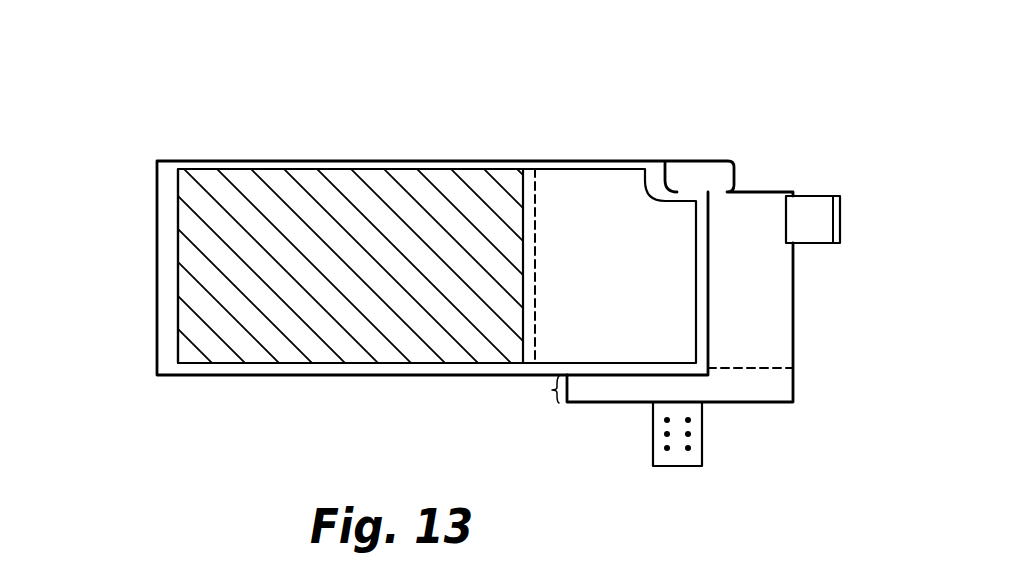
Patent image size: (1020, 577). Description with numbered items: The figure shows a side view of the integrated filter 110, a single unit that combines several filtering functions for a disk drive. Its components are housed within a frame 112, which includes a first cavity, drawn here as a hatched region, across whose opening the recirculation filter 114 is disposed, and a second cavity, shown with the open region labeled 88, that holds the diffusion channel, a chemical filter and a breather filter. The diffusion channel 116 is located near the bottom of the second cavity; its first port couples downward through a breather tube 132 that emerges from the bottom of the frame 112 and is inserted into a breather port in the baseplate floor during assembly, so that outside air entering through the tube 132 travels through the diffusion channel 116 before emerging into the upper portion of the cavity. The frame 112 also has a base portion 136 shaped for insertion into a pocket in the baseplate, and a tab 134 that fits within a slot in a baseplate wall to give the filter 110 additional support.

The integrated filter 110 is at (205, 103).
The frame 112 is at (590, 161).
The recirculation filter 114 is at (195, 220).
The reservoir cavity 88 is at (632, 238).
The tab 134 is at (805, 210).
The diffusion channel 116 is at (780, 383).
The breather tube 132 is at (703, 432).
The base portion 136 is at (552, 390).